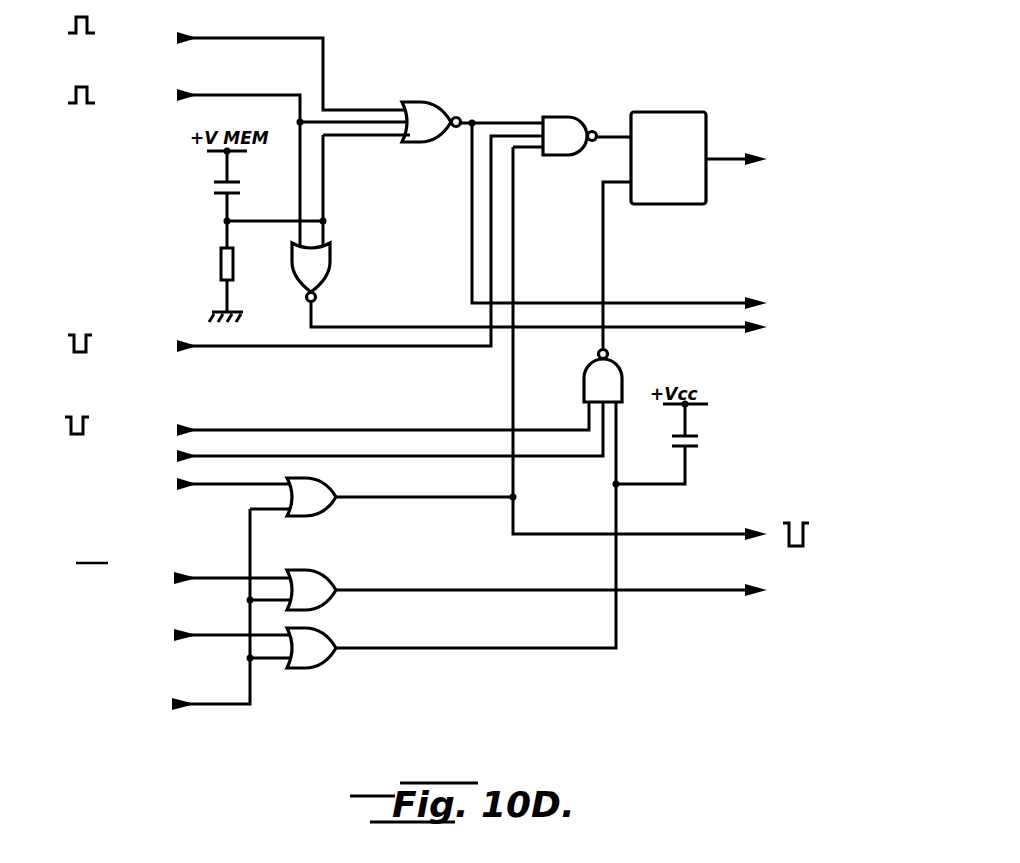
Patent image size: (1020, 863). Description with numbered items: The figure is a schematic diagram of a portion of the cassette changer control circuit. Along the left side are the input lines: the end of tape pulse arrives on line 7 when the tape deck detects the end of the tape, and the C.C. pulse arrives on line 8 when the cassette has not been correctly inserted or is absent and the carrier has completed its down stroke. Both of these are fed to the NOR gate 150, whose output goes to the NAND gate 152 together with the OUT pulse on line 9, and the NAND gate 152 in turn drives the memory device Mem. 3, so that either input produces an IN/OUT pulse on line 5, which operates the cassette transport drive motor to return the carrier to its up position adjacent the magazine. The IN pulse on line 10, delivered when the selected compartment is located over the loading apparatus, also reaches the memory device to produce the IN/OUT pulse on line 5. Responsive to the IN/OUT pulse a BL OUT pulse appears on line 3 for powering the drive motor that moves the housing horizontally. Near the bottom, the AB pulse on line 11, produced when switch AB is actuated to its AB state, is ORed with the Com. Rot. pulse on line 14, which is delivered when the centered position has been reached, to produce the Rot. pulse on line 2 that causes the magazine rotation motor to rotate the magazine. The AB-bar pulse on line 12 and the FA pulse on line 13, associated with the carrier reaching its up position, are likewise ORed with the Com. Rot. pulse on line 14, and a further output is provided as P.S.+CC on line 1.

The P.S.+CC output line 1 is at (613, 321).
The Rot. pulse line 2 is at (712, 349).
The BL OUT pulse line 3 is at (623, 598).
The IN/OUT pulse line 5 is at (775, 158).
The end of tape pulse line 7 is at (219, 60).
The C.C. pulse line 8 is at (219, 164).
The OUT pulse line 9 is at (284, 247).
The IN pulse line 10 is at (305, 422).
The AB pulse line 11 is at (268, 492).
The AB-bar pulse line 12 is at (179, 586).
The FA pulse line 13 is at (179, 644).
The Com. Rot. pulse line 14 is at (138, 616).
The NOR gate 150 is at (466, 90).
The NAND gate 152 is at (597, 98).